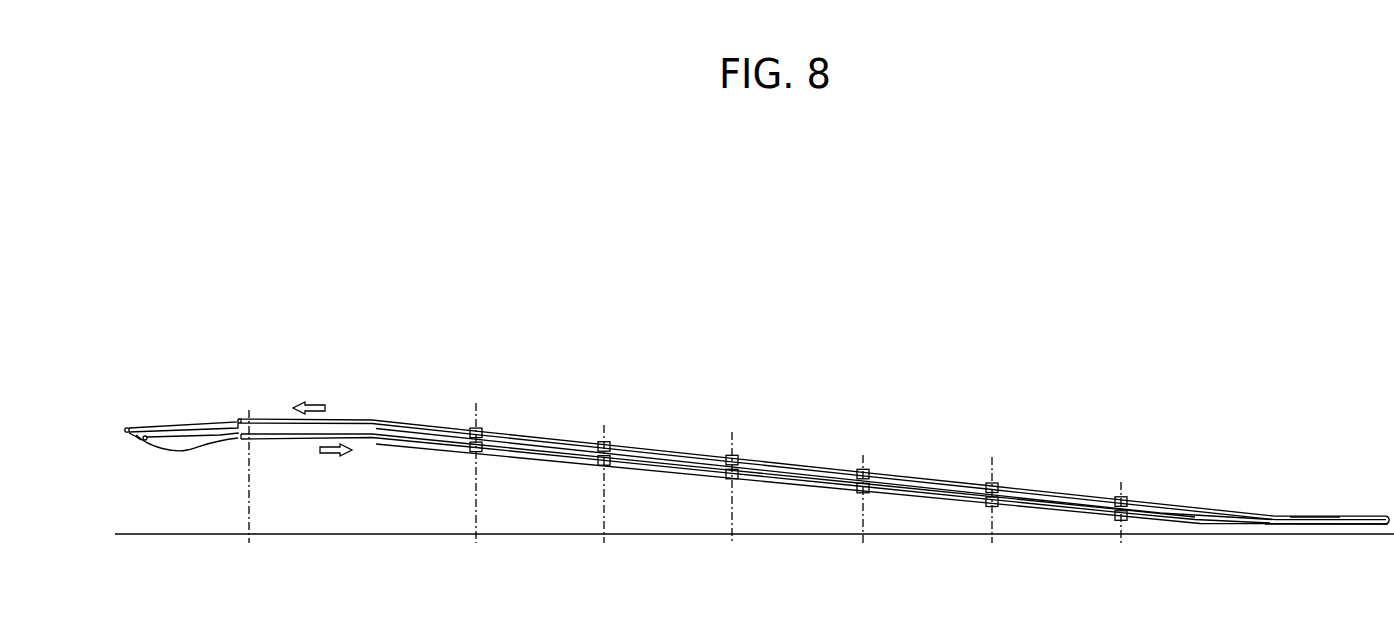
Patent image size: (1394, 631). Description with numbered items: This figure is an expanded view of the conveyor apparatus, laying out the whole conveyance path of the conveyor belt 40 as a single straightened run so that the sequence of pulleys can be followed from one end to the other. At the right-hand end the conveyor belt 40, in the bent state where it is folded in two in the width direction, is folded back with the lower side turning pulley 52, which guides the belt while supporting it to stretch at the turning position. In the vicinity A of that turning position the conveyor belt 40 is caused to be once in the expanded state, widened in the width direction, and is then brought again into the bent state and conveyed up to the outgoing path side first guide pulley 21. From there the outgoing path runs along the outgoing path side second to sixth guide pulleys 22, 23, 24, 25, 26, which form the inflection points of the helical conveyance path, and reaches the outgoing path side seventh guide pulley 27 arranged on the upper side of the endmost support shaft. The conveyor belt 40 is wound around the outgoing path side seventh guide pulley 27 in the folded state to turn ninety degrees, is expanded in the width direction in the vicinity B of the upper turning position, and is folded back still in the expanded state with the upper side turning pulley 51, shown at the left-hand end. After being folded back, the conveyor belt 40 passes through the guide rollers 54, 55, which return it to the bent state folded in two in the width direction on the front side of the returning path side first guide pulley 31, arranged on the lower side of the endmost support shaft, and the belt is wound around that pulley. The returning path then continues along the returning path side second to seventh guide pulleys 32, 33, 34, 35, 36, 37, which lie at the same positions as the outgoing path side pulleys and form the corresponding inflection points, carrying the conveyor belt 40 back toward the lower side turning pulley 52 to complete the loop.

The outgoing path side first guide pulley 21 is at (1123, 500).
The outgoing path side second guide pulley 22 is at (995, 486).
The outgoing path side third guide pulley 23 is at (866, 472).
The outgoing path side fourth guide pulley 24 is at (738, 459).
The outgoing path side fifth guide pulley 25 is at (610, 445).
The outgoing path side sixth guide pulley 26 is at (478, 430).
The outgoing path side seventh guide pulley 27 is at (255, 419).
The returning path side first guide pulley 31 is at (254, 440).
The returning path side second guide pulley 32 is at (479, 452).
The returning path side third guide pulley 33 is at (609, 465).
The returning path side fourth guide pulley 34 is at (737, 478).
The returning path side fifth guide pulley 35 is at (867, 495).
The returning path side sixth guide pulley 36 is at (995, 510).
The returning path side seventh guide pulley 37 is at (1121, 522).
The conveyor belt 40 is at (930, 481).
The upper side turning pulley 51 is at (127, 428).
The lower side turning pulley 52 is at (1380, 516).
The guide roller 54 is at (132, 437).
The guide roller 55 is at (148, 440).
The vicinity of the turning position A is at (1340, 516).
The vicinity of the turning position B is at (150, 426).